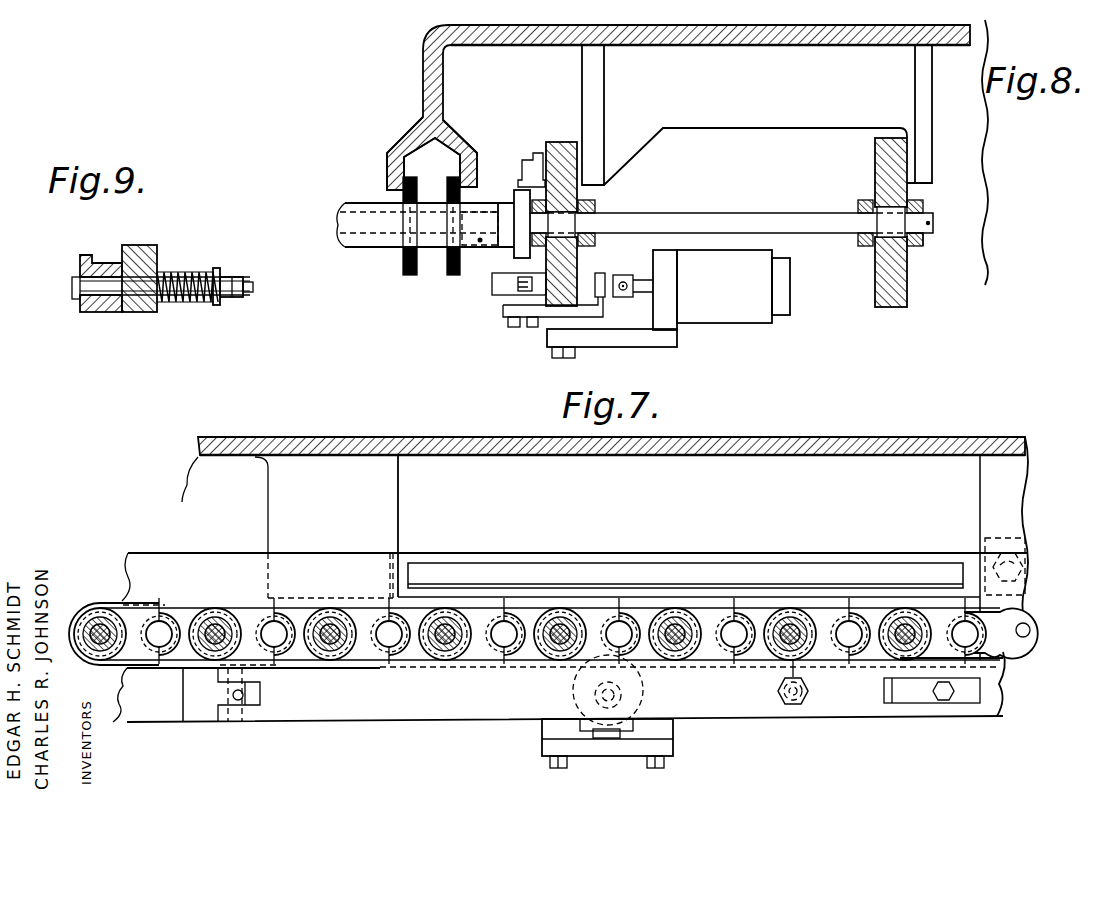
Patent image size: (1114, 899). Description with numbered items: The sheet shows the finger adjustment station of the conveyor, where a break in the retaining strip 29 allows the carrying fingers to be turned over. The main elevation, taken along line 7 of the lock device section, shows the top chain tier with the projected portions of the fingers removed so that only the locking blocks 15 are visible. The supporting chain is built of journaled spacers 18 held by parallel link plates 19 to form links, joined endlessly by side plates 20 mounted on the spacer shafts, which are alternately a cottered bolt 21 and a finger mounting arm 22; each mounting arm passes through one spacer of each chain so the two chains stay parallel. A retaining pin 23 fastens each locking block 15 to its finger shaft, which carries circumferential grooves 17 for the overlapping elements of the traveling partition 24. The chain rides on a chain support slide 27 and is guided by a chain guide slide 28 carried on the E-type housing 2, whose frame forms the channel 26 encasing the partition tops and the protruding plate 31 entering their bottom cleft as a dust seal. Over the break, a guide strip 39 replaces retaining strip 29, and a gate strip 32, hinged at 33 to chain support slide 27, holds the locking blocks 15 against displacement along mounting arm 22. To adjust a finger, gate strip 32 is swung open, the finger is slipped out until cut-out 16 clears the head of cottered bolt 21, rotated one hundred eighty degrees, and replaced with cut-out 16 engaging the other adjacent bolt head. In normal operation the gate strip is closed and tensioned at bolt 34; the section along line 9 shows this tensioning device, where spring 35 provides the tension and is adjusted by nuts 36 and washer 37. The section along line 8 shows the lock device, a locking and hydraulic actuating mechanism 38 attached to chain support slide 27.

In FIG. 8, the housing 2 is at (425, 71).
In FIG. 8, the section line 7— 7 is at (482, 110).
In FIG. 7, the section line 8— 8 is at (605, 553).
In FIG. 7, the section line 9— 9 is at (718, 655).
In FIG. 8, the locking block 15 is at (514, 200).
In FIG. 7, the locking block 15 is at (481, 606).
In FIG. 7, the cut-out 16 is at (497, 645).
In FIG. 8, the circumferential grooves 17 is at (410, 233).
In FIG. 8, the journaled spacers 18 is at (568, 210).
In FIG. 8, the link plates 19 is at (906, 250).
In FIG. 8, the side plates 20 is at (607, 277).
In FIG. 7, the cottered bolt 21 is at (289, 614).
In FIG. 8, the finger mounting arm 22 is at (762, 198).
In FIG. 7, the finger mounting arm 22 is at (344, 613).
In FIG. 8, the retaining pin 23 is at (480, 243).
In FIG. 7, the retaining pin 23 is at (438, 652).
In FIG. 8, the traveling partition 24 is at (412, 272).
In FIG. 8, the channel 26 is at (428, 148).
In FIG. 8, the chain support slide 27 is at (584, 266).
In FIG. 7, the chain support slide 27 is at (153, 713).
In FIG. 8, the chain guide slide 28 is at (566, 119).
In FIG. 7, the retaining strip 29 is at (233, 532).
In FIG. 8, the protruding plate 31 is at (518, 270).
In FIG. 7, the protruding plate 31 is at (607, 711).
In FIG. 9, the gate strip 32 is at (100, 303).
In FIG. 7, the gate strip 32 is at (365, 712).
In FIG. 7, the hinge 33 is at (240, 719).
In FIG. 9, the bolt 34 is at (184, 274).
In FIG. 7, the bolt 34 is at (798, 702).
In FIG. 9, the spring 35 is at (178, 305).
In FIG. 9, the nuts 36 is at (241, 300).
In FIG. 9, the washer 37 is at (217, 309).
In FIG. 8, the locking and hydraulic actuating mechanism 38 is at (748, 312).
In FIG. 8, the guide strip 39 is at (520, 182).
In FIG. 7, the guide strip 39 is at (683, 540).